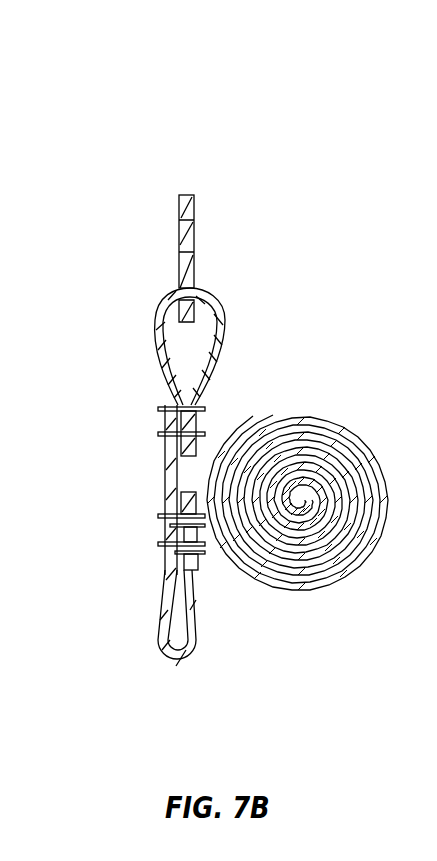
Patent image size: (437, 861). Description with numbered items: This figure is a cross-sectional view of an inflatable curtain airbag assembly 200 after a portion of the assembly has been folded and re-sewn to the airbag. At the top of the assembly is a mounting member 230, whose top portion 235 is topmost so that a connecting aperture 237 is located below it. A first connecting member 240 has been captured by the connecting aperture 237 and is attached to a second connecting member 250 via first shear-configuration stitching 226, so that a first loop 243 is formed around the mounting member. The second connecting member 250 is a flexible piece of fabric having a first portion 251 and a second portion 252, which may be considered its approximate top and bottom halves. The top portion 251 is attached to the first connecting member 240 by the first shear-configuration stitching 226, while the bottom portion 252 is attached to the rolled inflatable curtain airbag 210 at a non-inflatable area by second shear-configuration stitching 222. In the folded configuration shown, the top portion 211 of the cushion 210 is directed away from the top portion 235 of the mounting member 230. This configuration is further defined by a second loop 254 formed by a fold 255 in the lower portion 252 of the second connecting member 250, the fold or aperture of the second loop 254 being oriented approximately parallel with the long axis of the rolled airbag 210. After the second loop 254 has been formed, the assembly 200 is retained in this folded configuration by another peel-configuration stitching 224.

The inflatable curtain airbag assembly 200 is at (183, 104).
The inflatable curtain airbag 210 is at (333, 412).
The top portion of cushion 211 is at (203, 558).
The second shear-configuration stitching 222 is at (183, 552).
The peel-configuration stitching 224 is at (158, 544).
The first shear-configuration stitching 226 is at (158, 434).
The mounting member 230 is at (178, 262).
The top portion of mounting member 235 is at (194, 193).
The connecting aperture 237 is at (195, 290).
The first connecting member 240 is at (156, 333).
The first loop 243 is at (188, 344).
The second connecting member 250 is at (160, 487).
The first portion of second connecting member 251 is at (160, 447).
The second portion of second connecting member 252 is at (192, 603).
The second loop 254 is at (189, 662).
The fold 255 is at (172, 665).